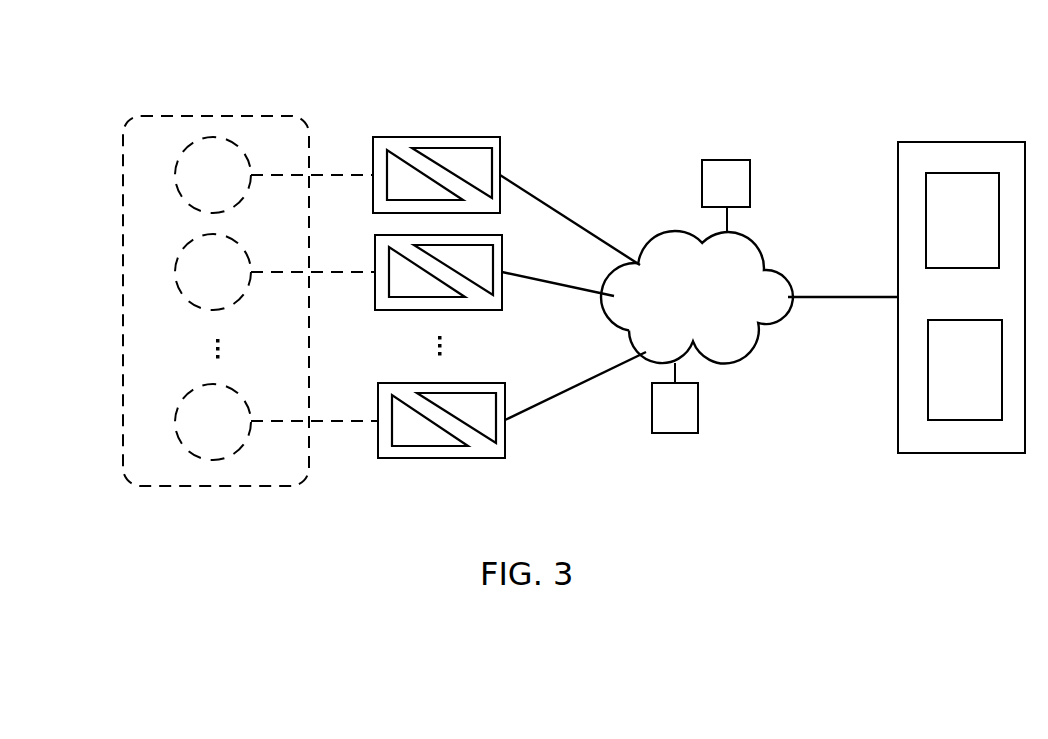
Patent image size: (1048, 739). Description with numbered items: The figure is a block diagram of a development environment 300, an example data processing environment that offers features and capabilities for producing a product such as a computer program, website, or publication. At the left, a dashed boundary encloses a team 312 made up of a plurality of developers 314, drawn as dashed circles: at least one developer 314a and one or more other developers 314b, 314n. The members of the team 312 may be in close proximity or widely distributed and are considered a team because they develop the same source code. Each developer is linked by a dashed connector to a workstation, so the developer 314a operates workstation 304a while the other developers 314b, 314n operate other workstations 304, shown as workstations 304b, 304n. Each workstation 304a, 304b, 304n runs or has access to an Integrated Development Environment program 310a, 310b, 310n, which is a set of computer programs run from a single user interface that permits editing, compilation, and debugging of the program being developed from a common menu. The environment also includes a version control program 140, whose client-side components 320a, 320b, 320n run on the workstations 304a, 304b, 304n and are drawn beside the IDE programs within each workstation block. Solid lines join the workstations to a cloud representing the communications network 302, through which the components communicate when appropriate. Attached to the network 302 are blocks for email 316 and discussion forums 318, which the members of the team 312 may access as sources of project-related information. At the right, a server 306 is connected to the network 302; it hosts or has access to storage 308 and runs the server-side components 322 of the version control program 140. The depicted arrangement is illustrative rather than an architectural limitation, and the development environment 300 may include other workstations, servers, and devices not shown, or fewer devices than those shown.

The development environment 300 is at (257, 88).
The team 312 is at (177, 110).
The plurality of developers 314 is at (270, 320).
The developer 314a is at (213, 175).
The other developer 314b is at (213, 272).
The other developer 314n is at (213, 422).
The version control program 140 is at (383, 88).
The workstations 304 is at (509, 108).
The developer's workstation 304a is at (451, 142).
The developer's workstation 304b is at (446, 298).
The developer's workstation 304n is at (446, 428).
The Integrated Development Environment program 310a is at (405, 155).
The Integrated Development Environment program 310b is at (428, 299).
The Integrated Development Environment program 310n is at (390, 432).
The client-side component 320a is at (493, 158).
The client-side component 320b is at (493, 286).
The client-side component 320n is at (497, 431).
The communications network 302 is at (666, 235).
The email 316 is at (725, 160).
The discussion forums 318 is at (698, 408).
The server 306 is at (898, 172).
The storage 308 is at (926, 220).
The server-side components 322 is at (928, 368).